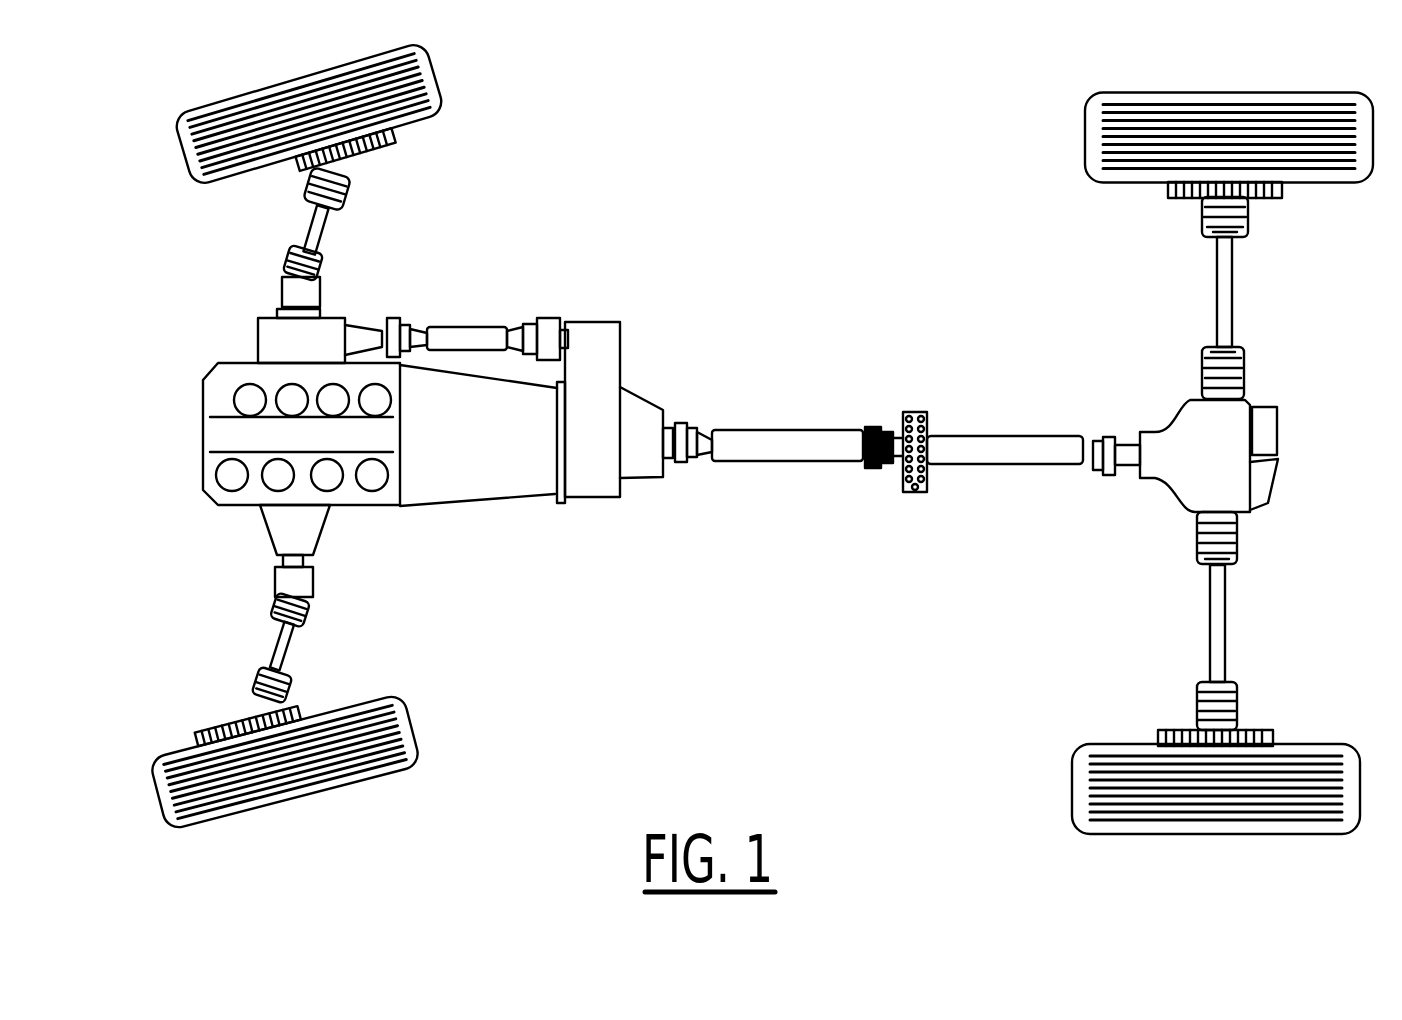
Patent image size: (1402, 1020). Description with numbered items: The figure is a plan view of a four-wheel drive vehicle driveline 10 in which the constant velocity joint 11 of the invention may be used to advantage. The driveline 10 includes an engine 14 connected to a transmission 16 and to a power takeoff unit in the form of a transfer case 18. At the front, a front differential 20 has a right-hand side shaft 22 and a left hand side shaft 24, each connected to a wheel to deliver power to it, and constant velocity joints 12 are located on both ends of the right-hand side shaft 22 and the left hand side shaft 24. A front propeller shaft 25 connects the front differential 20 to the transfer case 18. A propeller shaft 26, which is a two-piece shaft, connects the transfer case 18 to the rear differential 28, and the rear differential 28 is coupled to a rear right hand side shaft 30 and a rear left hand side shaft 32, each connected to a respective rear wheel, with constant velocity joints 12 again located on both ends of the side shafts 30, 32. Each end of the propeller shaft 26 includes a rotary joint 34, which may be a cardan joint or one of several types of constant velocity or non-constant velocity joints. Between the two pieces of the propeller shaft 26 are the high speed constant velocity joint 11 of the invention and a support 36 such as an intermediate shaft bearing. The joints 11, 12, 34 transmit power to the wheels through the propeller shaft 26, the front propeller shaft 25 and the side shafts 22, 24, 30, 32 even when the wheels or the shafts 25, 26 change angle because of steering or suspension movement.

The four-wheel drive vehicle driveline 10 is at (786, 168).
The constant velocity joint 11 is at (892, 404).
The constant velocity joints 12 is at (347, 195).
The engine 14 is at (205, 440).
The transmission 16 is at (496, 489).
The transfer case 18 is at (612, 378).
The front differential 20 is at (268, 342).
The right-hand side shaft 22 is at (323, 235).
The left hand side shaft 24 is at (263, 647).
The front propeller shaft 25 is at (458, 326).
The propeller shaft 26 is at (822, 494).
The rear differential 28 is at (1230, 434).
The rear right hand side shaft 30 is at (1227, 304).
The rear left hand side shaft 32 is at (1227, 631).
The rotary joint 34 is at (397, 323).
The support 36 is at (913, 496).